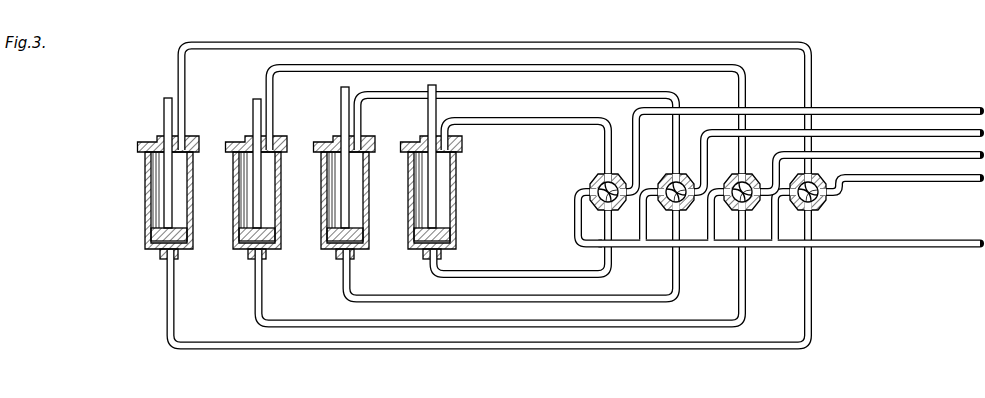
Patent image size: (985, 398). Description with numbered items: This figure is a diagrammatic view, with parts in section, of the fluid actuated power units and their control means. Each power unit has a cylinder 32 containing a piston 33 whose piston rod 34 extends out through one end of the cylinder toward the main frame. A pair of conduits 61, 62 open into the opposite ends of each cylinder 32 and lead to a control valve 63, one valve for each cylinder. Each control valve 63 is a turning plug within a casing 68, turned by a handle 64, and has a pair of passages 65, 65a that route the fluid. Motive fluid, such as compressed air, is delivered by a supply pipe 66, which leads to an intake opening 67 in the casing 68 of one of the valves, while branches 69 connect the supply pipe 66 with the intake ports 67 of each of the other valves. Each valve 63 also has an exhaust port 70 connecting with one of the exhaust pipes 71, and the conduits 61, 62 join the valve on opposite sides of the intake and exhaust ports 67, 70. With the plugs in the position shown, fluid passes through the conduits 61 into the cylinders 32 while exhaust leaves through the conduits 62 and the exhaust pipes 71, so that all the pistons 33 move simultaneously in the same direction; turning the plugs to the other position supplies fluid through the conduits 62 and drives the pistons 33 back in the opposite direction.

The cylinder 32 is at (231, 171).
The piston 33 is at (248, 235).
The piston rod 34 is at (164, 117).
The conduit 61 is at (186, 75).
The conduit 62 is at (175, 299).
The control valve 63 is at (596, 187).
The handle 64 is at (801, 183).
The passage 65 is at (602, 178).
The passage 65a is at (850, 223).
The supply pipe 66 is at (912, 247).
The intake opening 67 is at (576, 207).
The casing 68 is at (601, 208).
The branch 69 is at (655, 248).
The exhaust port 70 is at (631, 178).
The exhaust pipe 71 is at (937, 130).